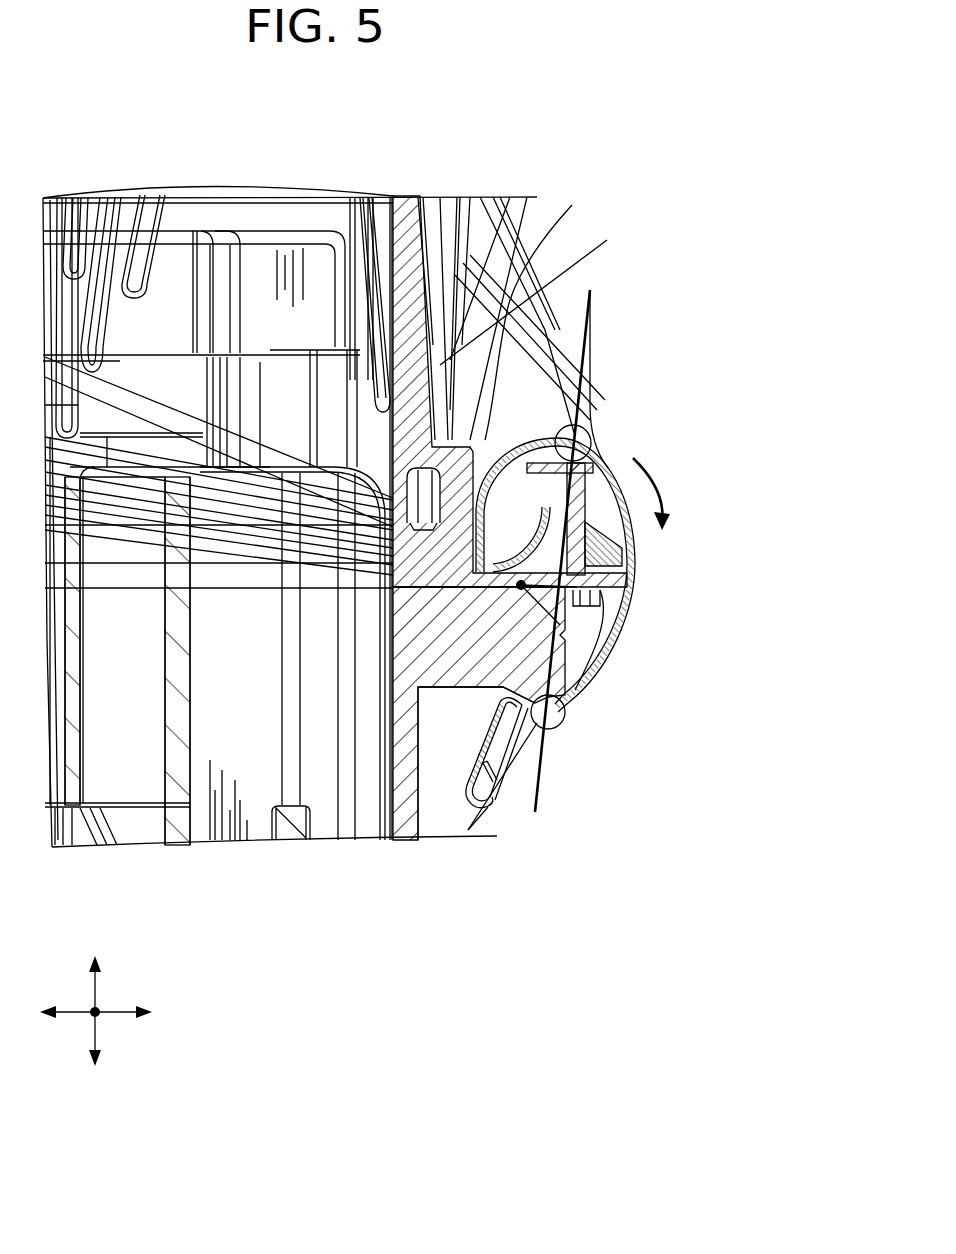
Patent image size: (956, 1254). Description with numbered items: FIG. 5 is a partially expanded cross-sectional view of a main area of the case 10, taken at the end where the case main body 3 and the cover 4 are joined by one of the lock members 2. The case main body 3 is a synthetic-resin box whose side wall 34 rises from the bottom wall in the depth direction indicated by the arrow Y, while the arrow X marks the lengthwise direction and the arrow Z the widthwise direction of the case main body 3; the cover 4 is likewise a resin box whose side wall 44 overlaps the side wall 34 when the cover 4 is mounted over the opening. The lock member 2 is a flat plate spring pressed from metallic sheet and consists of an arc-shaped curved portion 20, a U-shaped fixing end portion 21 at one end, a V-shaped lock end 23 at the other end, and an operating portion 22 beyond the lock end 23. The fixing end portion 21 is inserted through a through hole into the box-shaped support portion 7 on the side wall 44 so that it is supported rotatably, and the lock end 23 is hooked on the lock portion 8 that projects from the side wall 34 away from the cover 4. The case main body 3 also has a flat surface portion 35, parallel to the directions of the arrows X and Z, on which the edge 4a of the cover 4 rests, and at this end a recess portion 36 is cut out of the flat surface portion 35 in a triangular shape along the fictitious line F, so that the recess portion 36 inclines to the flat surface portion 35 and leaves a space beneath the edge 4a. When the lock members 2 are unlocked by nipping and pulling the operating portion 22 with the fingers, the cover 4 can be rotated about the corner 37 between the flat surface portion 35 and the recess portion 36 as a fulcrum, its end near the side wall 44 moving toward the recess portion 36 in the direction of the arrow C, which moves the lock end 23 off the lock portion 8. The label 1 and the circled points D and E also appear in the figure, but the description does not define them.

The apparatus 1 is at (612, 124).
The case 10 is at (378, 175).
The cover 4 is at (308, 215).
The case main body 3 is at (345, 842).
The side wall 34 is at (420, 810).
The flat surface portion 35 is at (505, 605).
The corner 37 is at (518, 592).
The lock member 2 is at (640, 620).
The edge 4a is at (603, 600).
The curved portion 20 is at (612, 590).
The support portion 7 is at (612, 470).
The recess portion 36 is at (605, 668).
The lock portion 8 is at (562, 701).
The point E is at (566, 727).
The point D is at (592, 432).
The fictitious line F is at (588, 320).
The arrow C is at (666, 490).
The lock end 23 is at (551, 728).
The operating portion 22 is at (490, 808).
The fixing end portion 21 is at (530, 288).
The side wall 44 is at (509, 312).
The arrow X is at (115, 1014).
The arrow Y is at (97, 990).
The arrow Z is at (90, 1014).